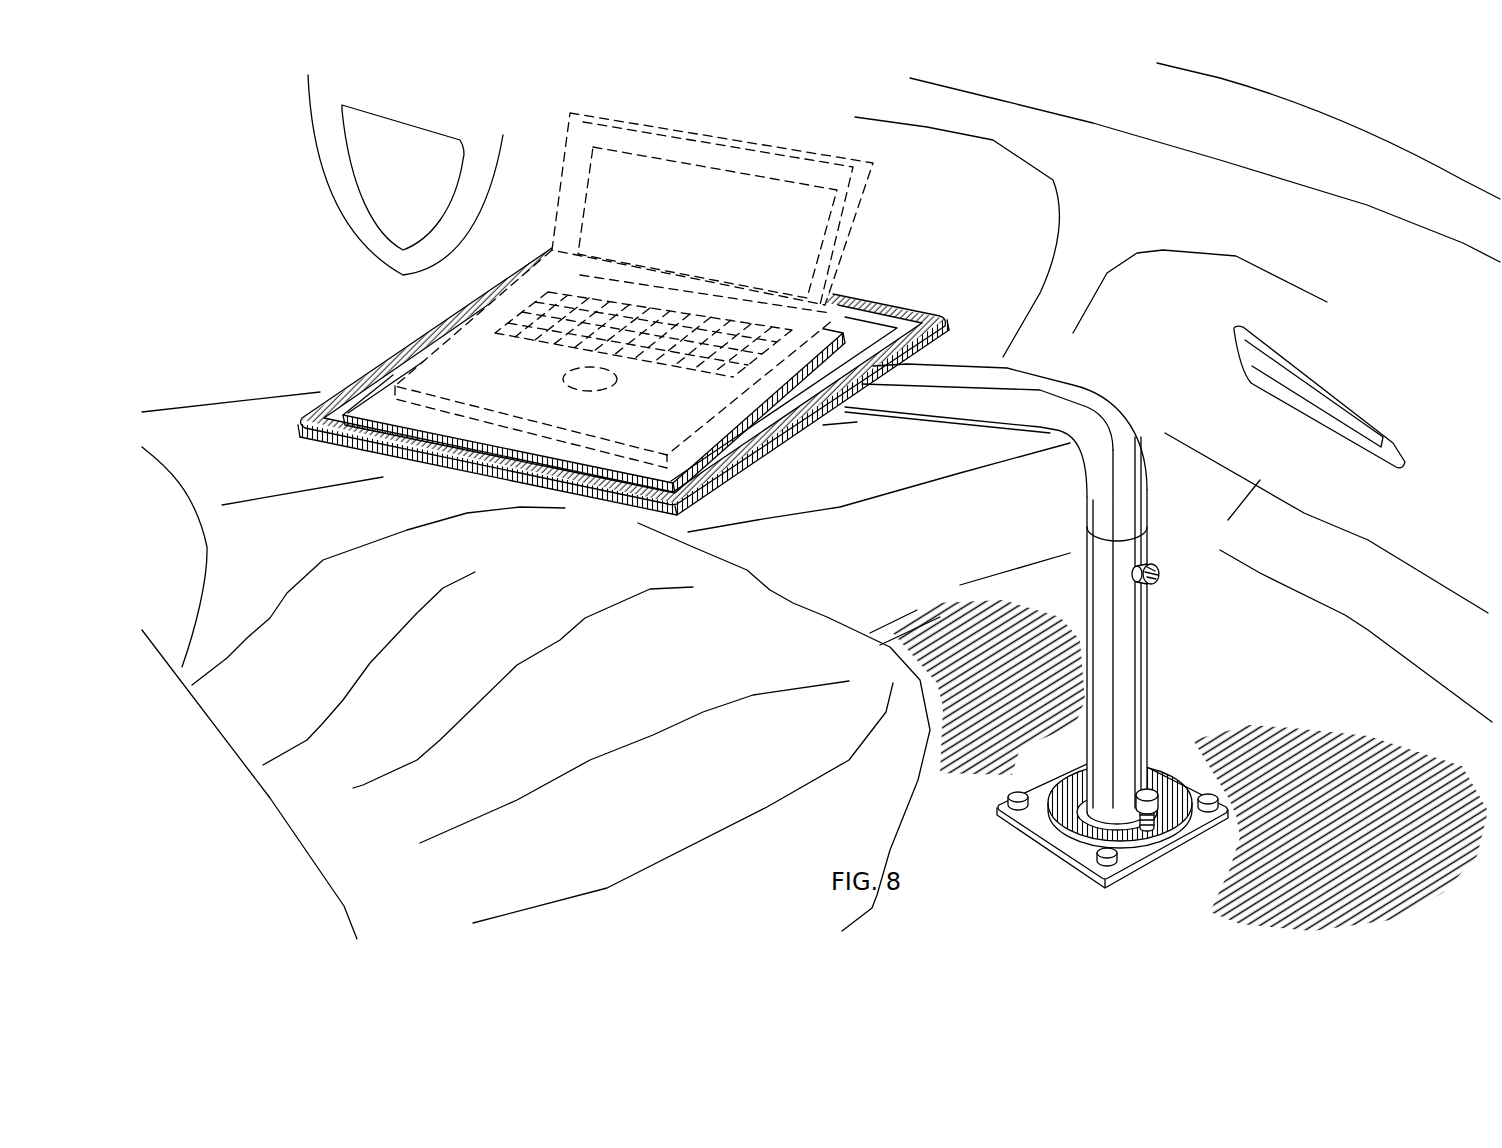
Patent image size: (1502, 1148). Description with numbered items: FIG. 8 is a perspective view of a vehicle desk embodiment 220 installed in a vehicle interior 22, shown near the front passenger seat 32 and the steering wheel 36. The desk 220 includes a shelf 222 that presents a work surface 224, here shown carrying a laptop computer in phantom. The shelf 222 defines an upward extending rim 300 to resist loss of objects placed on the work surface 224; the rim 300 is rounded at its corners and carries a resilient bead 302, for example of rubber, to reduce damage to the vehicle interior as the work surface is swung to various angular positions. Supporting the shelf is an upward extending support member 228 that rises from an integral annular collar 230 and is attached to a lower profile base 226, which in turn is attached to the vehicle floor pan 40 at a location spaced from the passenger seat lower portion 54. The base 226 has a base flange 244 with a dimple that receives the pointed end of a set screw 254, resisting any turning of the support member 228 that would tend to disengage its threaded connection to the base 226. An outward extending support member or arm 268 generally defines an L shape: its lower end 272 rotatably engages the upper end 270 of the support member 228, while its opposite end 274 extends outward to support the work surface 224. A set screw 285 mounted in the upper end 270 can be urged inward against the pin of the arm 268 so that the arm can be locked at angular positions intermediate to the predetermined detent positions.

The vehicle interior 22 is at (975, 530).
The front passenger seat 32 is at (258, 825).
The steering wheel 36 is at (360, 235).
The floor pan 40 is at (1320, 828).
The passenger seat lower portion 54 is at (783, 623).
The vehicle desk embodiment 220 is at (1013, 322).
The shelf 222 is at (653, 376).
The work surface 224 is at (890, 320).
The base 226 is at (1185, 765).
The upward extending support member 228 is at (1158, 655).
The annular collar 230 is at (1070, 785).
The base flange 244 is at (1037, 787).
The set screw 254 is at (1148, 770).
The outward extending support member or arm 268 is at (1112, 378).
The upper end of support member 270 is at (1142, 550).
The lower end of arm 272 is at (1140, 524).
The opposite end of arm 274 is at (840, 425).
The set screw 285 is at (1158, 592).
The rim 300 is at (386, 350).
The bead 302 is at (622, 374).